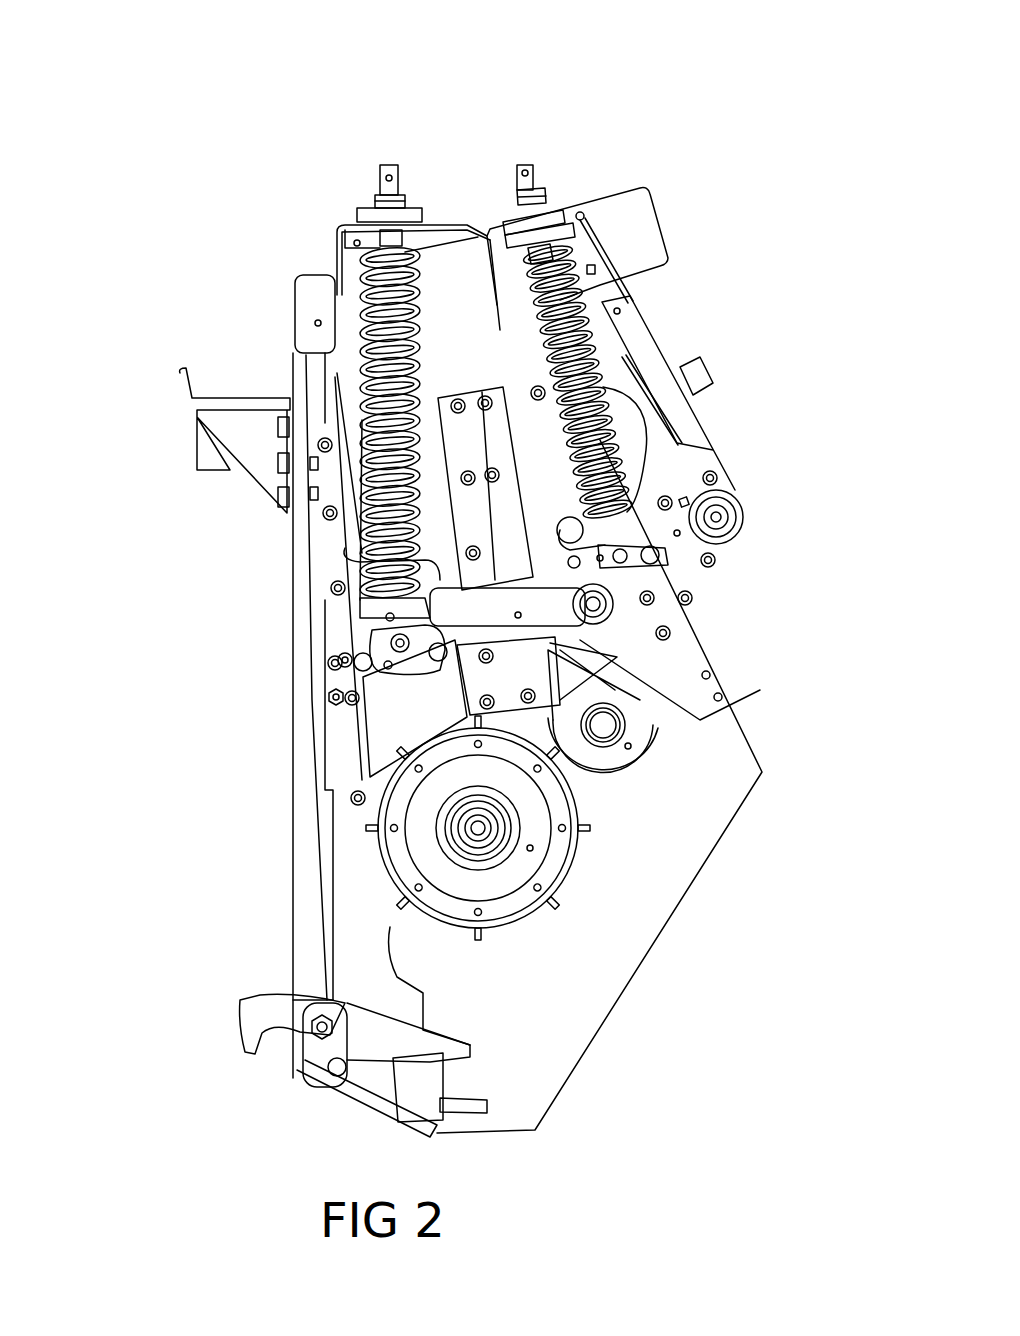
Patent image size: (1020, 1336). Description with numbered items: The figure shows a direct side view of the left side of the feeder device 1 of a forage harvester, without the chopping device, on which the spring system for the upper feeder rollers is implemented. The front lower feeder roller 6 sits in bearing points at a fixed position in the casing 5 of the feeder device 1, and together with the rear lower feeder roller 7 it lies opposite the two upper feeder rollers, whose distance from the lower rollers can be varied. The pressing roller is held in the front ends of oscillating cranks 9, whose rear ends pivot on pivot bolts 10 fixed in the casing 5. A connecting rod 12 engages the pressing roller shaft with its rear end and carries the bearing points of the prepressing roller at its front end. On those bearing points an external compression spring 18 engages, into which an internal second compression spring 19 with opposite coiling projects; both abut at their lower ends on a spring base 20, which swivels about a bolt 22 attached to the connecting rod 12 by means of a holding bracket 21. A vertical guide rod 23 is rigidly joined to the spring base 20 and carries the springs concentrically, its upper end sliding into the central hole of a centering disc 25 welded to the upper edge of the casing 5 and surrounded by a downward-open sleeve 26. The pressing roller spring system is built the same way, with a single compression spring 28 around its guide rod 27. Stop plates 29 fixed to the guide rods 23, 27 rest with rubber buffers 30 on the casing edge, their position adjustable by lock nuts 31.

The feeder device 1 is at (250, 864).
The casing 5 is at (335, 285).
The front lower feeder roller 6 is at (530, 848).
The rear lower feeder roller 7 is at (628, 745).
The oscillating crank 9 is at (686, 502).
The pivot bolt 10 is at (737, 494).
The connecting rod 12 is at (520, 616).
The compression spring 18 is at (378, 333).
The second compression spring 19 is at (372, 372).
The spring base 20 is at (405, 620).
The holding bracket 21 is at (625, 558).
The bolt 22 is at (655, 551).
The guide rod 23 is at (380, 175).
The centering disc 25 is at (365, 215).
The sleeve 26 is at (345, 232).
The guide rod 27 is at (530, 171).
The compression spring 28 is at (585, 295).
The stop plate 29 is at (598, 201).
The rubber buffer 30 is at (582, 219).
The lock nut 31 is at (552, 211).